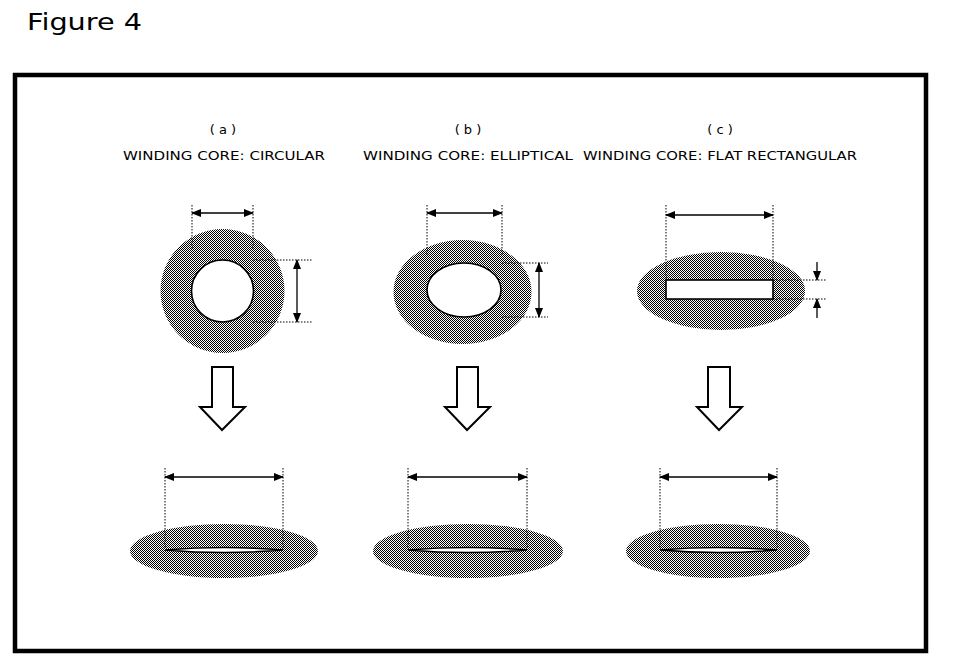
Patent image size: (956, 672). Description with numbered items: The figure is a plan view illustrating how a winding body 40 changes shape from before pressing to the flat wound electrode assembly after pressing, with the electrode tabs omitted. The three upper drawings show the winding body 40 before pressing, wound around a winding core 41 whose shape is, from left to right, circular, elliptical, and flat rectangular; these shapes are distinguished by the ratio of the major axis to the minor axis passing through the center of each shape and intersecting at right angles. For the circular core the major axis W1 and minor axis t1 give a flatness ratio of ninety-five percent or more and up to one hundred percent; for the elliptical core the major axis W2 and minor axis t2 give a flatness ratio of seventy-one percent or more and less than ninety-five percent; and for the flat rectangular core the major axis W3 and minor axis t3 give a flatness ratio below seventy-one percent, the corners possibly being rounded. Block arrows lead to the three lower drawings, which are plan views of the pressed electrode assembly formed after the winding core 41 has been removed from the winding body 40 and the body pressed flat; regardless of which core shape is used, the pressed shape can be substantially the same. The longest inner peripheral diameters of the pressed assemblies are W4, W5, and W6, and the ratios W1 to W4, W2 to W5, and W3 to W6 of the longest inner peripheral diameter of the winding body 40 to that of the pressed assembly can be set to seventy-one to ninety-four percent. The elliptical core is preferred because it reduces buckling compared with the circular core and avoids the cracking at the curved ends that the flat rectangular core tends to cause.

The winding body 40 is at (456, 428).
The winding core 41 is at (447, 311).
The major axis of circular winding core W1 is at (222, 221).
The minor axis of circular winding core t1 is at (289, 291).
The major axis of elliptical winding core W2 is at (464, 224).
The minor axis of elliptical winding core t2 is at (535, 290).
The major axis of flat rectangular winding core W3 is at (719, 236).
The minor axis of flat rectangular winding core t3 is at (814, 290).
The longest inner peripheral diameter of wound electrode assembly after pressing (ci W4 is at (224, 502).
The longest inner peripheral diameter of wound electrode assembly after pressing (el W5 is at (467, 502).
The longest inner peripheral diameter of wound electrode assembly after pressing (fl W6 is at (718, 502).